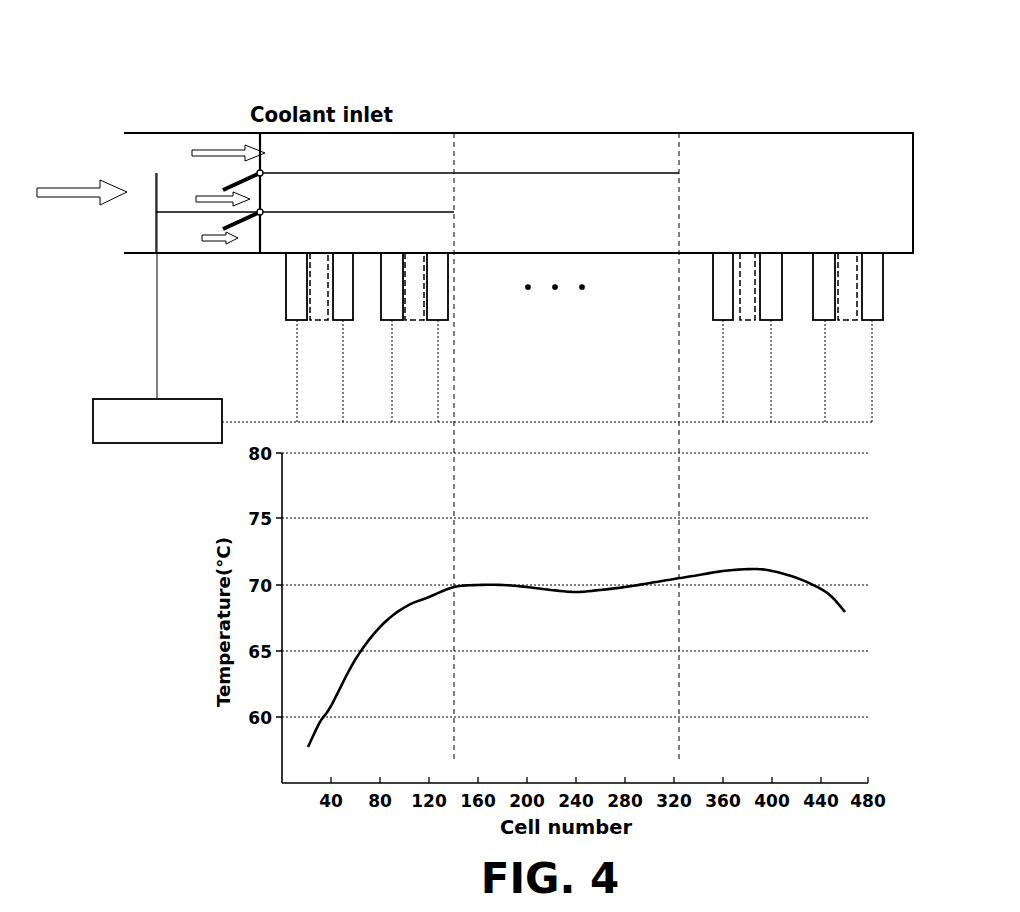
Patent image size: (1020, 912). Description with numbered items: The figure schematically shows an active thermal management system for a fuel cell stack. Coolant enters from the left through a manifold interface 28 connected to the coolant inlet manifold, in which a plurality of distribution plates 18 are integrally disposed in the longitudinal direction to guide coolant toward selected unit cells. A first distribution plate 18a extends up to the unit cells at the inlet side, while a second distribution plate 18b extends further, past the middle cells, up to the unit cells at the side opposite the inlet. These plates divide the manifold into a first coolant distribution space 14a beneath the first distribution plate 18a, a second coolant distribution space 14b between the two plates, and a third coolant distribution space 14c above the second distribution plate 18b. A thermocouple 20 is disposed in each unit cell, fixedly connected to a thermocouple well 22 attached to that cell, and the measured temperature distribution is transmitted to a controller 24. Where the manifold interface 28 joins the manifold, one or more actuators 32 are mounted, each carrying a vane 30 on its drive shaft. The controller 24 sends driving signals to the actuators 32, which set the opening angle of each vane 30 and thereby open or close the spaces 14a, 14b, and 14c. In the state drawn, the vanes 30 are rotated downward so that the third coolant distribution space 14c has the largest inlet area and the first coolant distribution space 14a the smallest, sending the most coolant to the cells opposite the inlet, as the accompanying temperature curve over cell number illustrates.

The first coolant distribution space 14a is at (440, 175).
The second coolant distribution space 14b is at (443, 197).
The third coolant distribution space 14c is at (562, 158).
The distribution plates 18 is at (405, 62).
The first distribution plate 18a is at (421, 230).
The second distribution plate 18b is at (382, 167).
The thermocouple 20 is at (286, 290).
The thermocouple well 22 is at (322, 322).
The controller 24 is at (133, 399).
The manifold interface 28 is at (137, 133).
The vane 30 is at (228, 185).
The actuator 32 is at (260, 215).